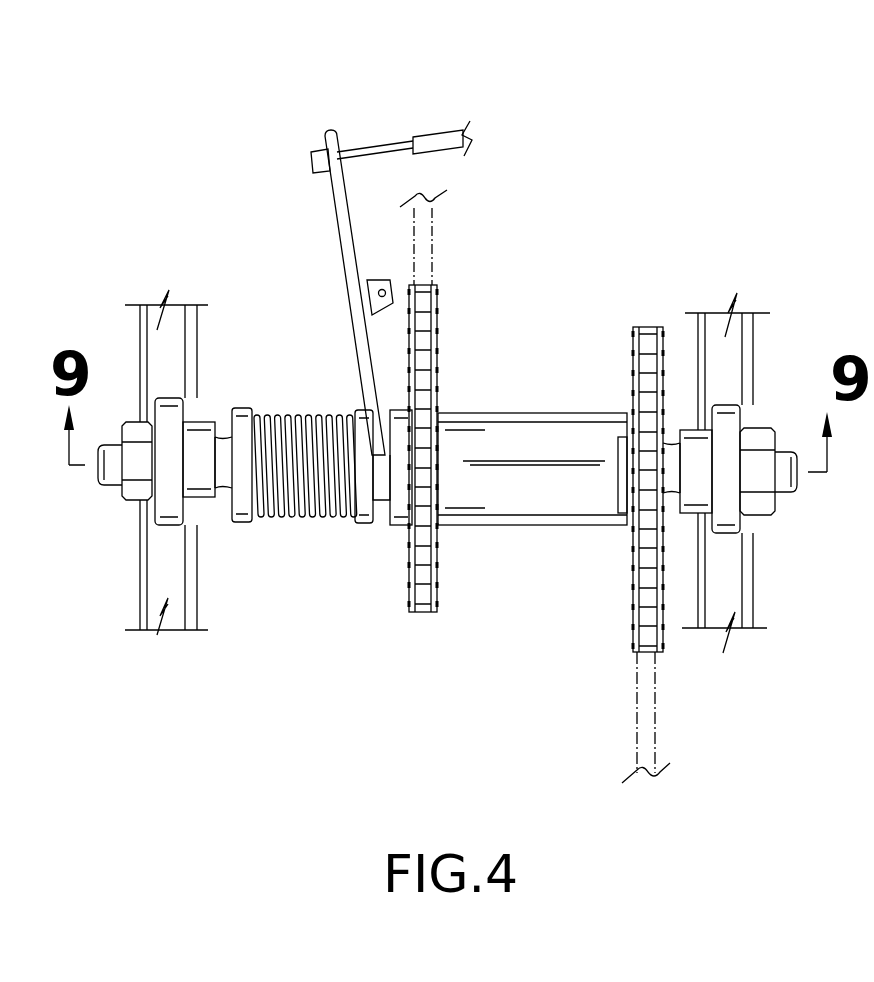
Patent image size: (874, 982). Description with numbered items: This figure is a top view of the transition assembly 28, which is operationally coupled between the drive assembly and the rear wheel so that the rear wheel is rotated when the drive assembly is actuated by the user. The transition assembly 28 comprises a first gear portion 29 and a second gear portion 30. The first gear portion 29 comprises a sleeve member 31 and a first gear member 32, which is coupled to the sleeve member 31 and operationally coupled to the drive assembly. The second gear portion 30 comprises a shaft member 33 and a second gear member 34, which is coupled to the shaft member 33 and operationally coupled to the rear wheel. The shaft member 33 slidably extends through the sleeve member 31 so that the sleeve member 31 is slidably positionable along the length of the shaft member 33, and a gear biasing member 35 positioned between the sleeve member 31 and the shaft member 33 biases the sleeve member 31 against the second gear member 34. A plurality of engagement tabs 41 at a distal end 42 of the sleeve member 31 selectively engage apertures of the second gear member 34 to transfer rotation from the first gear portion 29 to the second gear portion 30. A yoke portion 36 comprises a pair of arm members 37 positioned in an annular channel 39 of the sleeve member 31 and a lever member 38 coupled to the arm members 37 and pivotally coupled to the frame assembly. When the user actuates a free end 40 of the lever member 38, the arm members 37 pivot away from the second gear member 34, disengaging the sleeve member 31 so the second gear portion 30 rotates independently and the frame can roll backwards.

The transition assembly 28 is at (300, 686).
The first gear portion 29 is at (488, 410).
The second gear portion 30 is at (660, 407).
The sleeve member 31 is at (473, 478).
The first gear member 32 is at (437, 387).
The shaft member 33 is at (623, 497).
The second gear member 34 is at (660, 533).
The gear biasing member 35 is at (292, 513).
The yoke portion 36 is at (345, 250).
The arm members 37 is at (377, 427).
The lever member 38 is at (347, 222).
The annular channel 39 is at (387, 512).
The free end 40 is at (333, 135).
The engagement tabs 41 is at (627, 407).
The distal end 42 is at (595, 493).